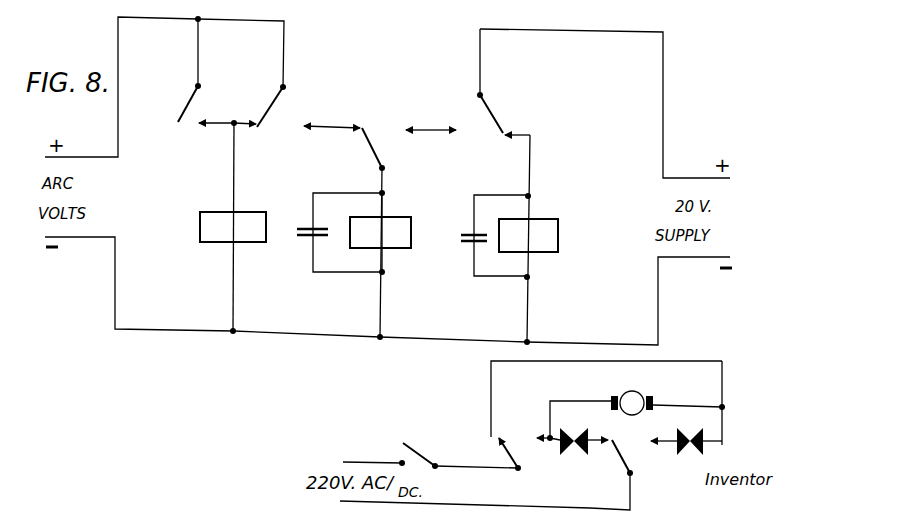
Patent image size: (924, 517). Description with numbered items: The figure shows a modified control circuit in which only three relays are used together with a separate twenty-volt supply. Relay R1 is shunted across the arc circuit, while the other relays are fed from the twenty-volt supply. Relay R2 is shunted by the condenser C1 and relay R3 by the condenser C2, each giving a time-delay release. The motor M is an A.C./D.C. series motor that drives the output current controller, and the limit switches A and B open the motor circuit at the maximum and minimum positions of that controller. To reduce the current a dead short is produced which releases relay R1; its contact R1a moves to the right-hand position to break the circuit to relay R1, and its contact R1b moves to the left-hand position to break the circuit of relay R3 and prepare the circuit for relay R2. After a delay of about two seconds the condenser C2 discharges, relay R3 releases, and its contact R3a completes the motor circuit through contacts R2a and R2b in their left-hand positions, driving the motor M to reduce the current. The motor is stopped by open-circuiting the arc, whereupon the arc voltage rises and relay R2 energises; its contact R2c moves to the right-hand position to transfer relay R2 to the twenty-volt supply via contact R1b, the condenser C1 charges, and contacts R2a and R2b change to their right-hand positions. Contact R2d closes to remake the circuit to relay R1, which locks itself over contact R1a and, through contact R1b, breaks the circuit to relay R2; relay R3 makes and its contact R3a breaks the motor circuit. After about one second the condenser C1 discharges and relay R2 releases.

The relay R1 contact a R1a is at (297, 106).
The relay R1 contact b R1b is at (365, 185).
The relay R2 contact a R2a is at (595, 416).
The relay R2 contact b R2b is at (638, 458).
The relay R2 contact c R2c is at (409, 232).
The relay R2 contact d R2d is at (279, 145).
The relay R3 contact a R3a is at (450, 344).
The condenser C1 is at (335, 232).
The condenser C2 is at (488, 236).
The limit switch A is at (572, 433).
The limit switch B is at (686, 434).
The A.C./D.C. series motor M is at (637, 403).